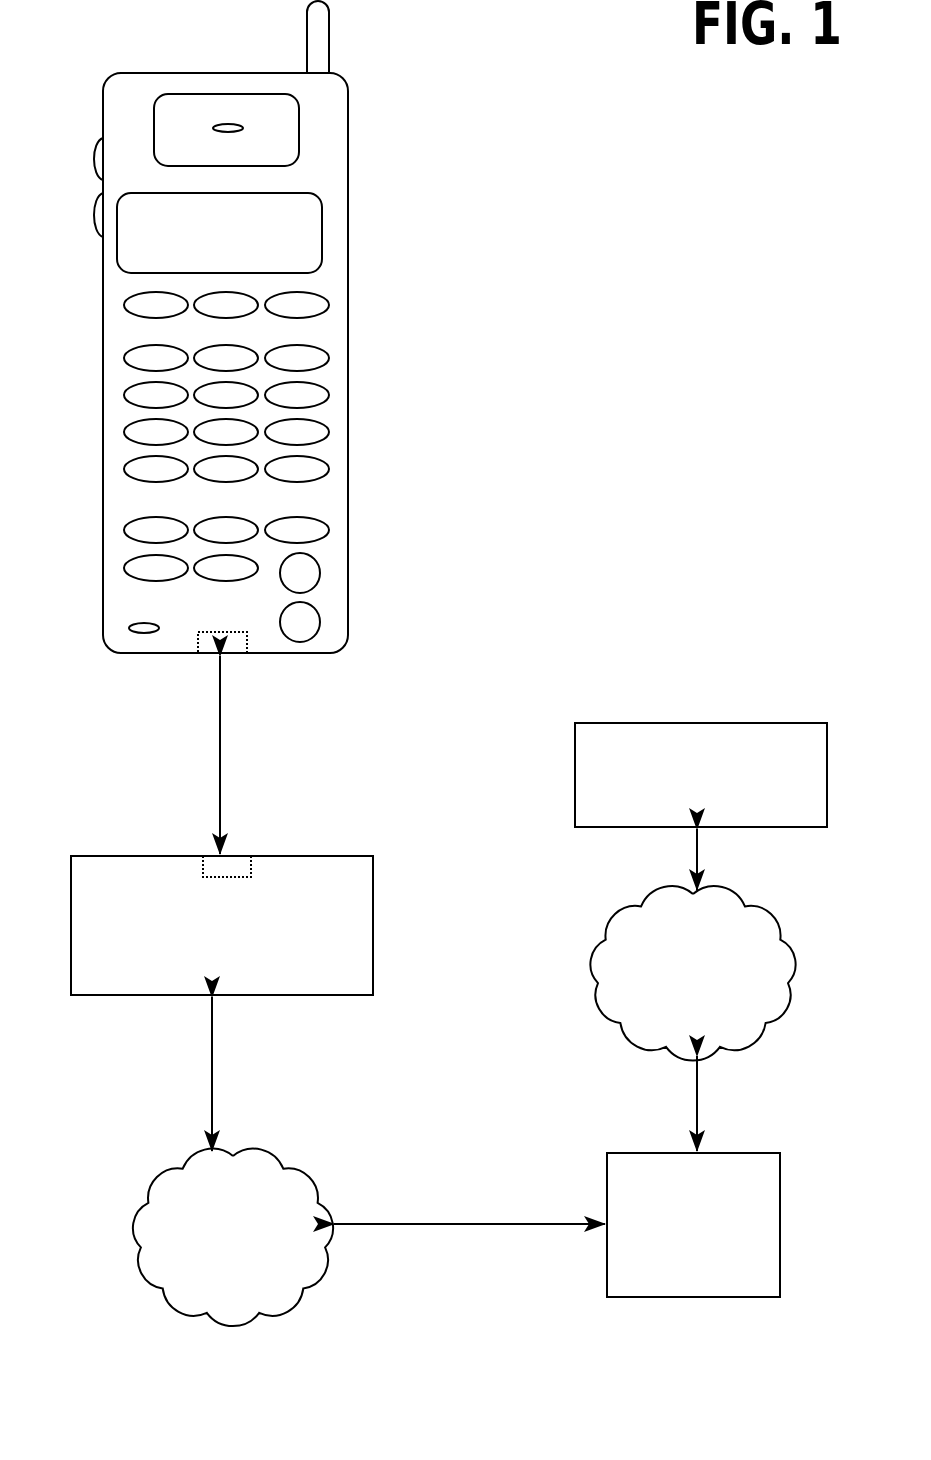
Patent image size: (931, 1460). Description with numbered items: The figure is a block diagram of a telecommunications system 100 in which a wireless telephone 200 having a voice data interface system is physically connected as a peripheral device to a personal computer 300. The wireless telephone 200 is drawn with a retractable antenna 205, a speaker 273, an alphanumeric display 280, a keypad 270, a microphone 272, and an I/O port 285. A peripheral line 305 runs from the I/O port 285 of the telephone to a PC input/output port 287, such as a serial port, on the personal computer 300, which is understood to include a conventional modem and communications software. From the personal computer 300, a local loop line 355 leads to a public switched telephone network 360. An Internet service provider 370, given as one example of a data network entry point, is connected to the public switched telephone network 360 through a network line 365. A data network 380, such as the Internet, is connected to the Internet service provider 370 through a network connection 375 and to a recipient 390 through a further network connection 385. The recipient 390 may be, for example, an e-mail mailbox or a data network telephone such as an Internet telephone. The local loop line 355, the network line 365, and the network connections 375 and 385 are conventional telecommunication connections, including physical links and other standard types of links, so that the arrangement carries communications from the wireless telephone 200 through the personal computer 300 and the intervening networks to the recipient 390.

The telecommunications system 100 is at (644, 364).
The wireless telephone 200 is at (134, 73).
The retractable antenna 205 is at (329, 37).
The speaker 273 is at (224, 126).
The alphanumeric display 280 is at (238, 205).
The keypad 270 is at (332, 334).
The microphone 272 is at (146, 633).
The I/O port 285 is at (237, 653).
The peripheral line 305 is at (220, 770).
The personal computer 300 is at (358, 856).
The PC input/output port 287 is at (240, 856).
The local loop line 355 is at (212, 1075).
The public switched telephone network 360 is at (297, 1172).
The network line 365 is at (437, 1224).
The Internet service provider 370 is at (733, 1152).
The network connection 375 is at (696, 1115).
The data network 380 is at (770, 918).
The network connection 385 is at (700, 870).
The recipient 390 is at (712, 725).